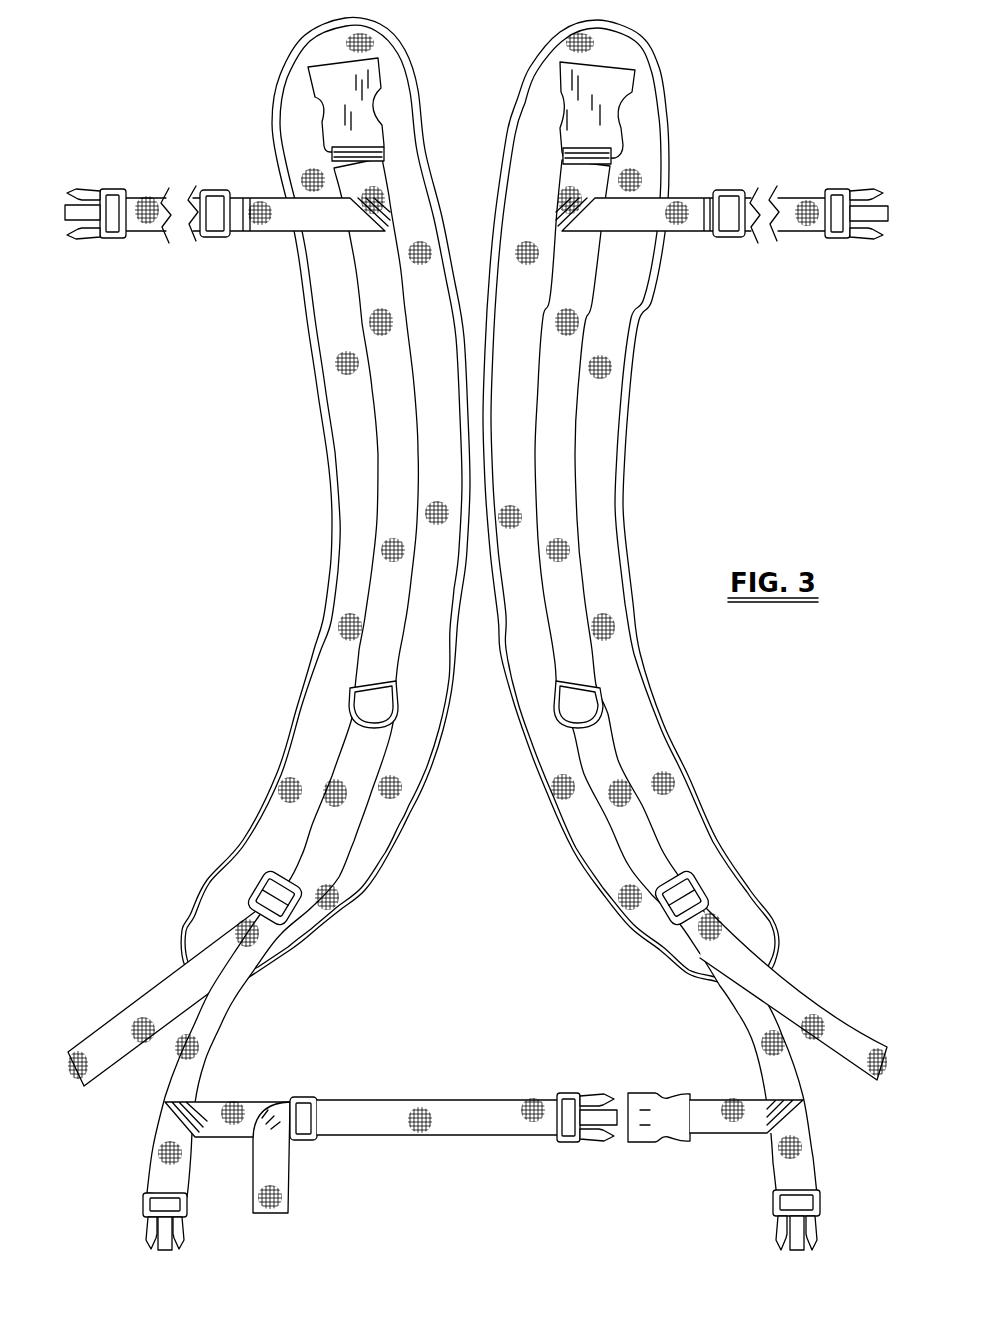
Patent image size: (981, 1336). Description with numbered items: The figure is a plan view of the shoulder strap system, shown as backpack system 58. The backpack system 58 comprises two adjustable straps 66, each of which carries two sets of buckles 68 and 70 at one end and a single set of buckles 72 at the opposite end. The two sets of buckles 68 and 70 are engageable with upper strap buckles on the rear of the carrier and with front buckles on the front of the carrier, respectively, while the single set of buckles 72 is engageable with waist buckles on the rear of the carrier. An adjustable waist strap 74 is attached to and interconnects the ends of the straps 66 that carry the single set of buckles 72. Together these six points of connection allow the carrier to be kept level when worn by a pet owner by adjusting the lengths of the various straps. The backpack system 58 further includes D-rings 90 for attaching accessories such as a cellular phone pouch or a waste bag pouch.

The backpack system 58 is at (223, 116).
The adjustable straps 66 is at (388, 567).
The buckles 68 is at (368, 118).
The buckles 70 is at (323, 222).
The single set of buckles 72 is at (187, 1213).
The adjustable waist strap 74 is at (650, 1093).
The D-rings 90 is at (350, 703).